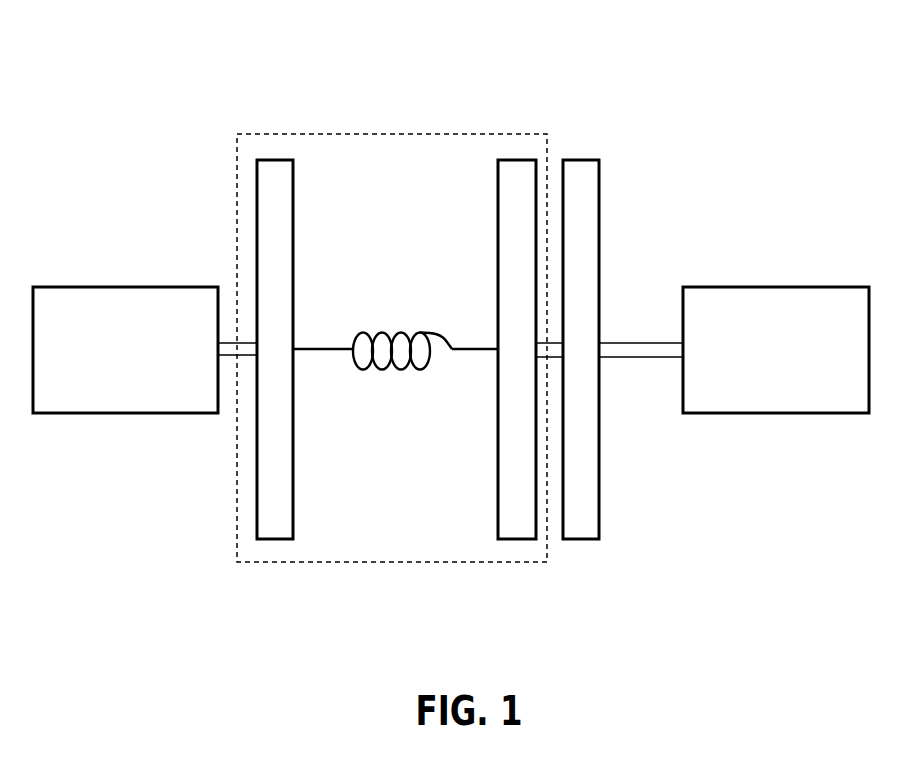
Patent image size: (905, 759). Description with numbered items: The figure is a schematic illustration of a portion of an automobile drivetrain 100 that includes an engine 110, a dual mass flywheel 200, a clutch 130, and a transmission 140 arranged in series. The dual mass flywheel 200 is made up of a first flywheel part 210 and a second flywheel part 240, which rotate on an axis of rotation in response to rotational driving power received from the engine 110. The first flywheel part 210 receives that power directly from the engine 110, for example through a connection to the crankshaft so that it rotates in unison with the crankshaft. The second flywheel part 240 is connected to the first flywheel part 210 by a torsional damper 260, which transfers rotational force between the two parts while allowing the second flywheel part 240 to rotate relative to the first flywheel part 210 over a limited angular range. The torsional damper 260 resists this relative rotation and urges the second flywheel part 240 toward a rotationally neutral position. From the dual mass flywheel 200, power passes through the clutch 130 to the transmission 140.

The automobile drivetrain 100 is at (726, 142).
The engine 110 is at (102, 298).
The clutch 130 is at (587, 165).
The transmission 140 is at (783, 297).
The dual mass flywheel 200 is at (535, 132).
The first flywheel part 210 is at (267, 174).
The second flywheel part 240 is at (513, 158).
The torsional damper 260 is at (402, 367).